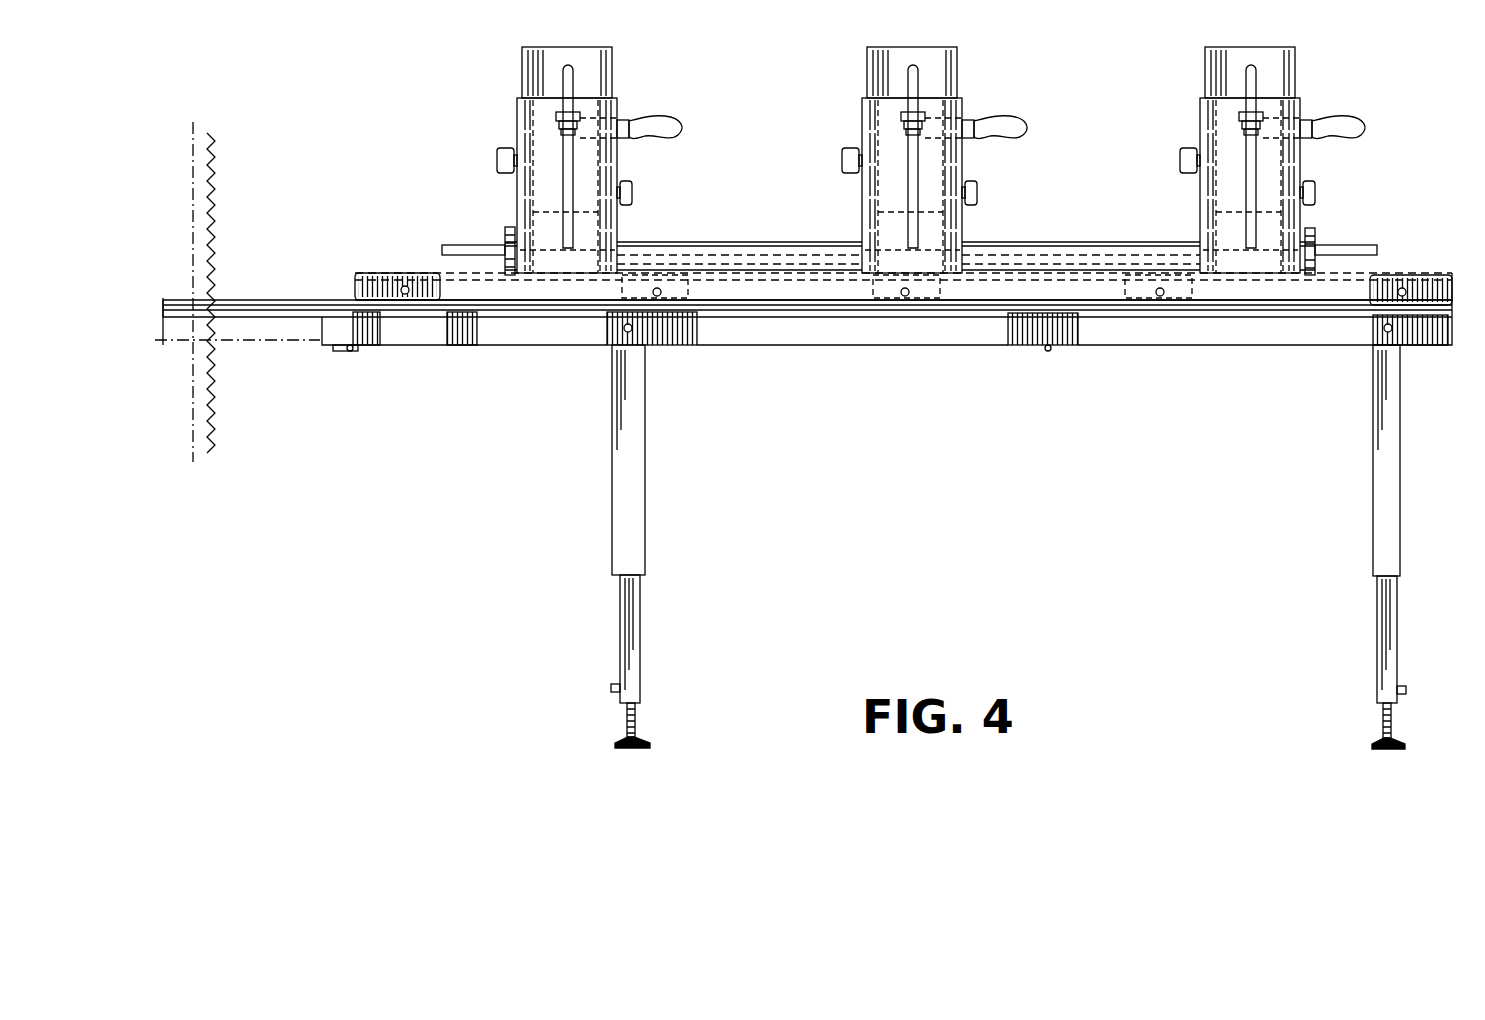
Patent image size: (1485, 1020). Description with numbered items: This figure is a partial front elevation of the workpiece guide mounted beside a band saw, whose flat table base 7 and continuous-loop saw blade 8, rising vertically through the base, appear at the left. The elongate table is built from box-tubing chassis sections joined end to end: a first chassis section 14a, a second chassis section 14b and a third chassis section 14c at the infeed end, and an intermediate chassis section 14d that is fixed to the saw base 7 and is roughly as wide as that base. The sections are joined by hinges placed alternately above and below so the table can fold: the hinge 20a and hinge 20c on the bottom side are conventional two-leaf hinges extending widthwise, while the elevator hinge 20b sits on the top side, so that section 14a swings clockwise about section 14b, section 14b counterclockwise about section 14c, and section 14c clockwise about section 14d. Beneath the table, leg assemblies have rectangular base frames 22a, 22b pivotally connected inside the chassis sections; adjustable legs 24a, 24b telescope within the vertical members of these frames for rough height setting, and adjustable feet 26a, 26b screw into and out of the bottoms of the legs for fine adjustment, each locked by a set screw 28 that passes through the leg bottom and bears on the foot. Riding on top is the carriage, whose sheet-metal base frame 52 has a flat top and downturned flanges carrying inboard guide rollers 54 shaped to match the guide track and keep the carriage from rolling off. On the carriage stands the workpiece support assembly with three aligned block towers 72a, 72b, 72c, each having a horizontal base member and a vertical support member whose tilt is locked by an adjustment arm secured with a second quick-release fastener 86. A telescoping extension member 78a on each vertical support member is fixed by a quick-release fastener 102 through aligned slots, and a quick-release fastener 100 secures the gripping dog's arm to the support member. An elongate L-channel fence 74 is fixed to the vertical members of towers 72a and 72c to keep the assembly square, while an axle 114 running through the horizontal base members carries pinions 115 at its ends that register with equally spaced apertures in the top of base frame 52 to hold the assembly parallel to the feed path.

The table base 7 is at (258, 330).
The saw blade 8 is at (207, 222).
The first chassis section 14a is at (1200, 330).
The second chassis section 14b is at (900, 322).
The third chassis section 14c is at (512, 322).
The intermediate chassis section 14d is at (336, 322).
The hinge 20a is at (1050, 348).
The elevator hinge 20b is at (695, 320).
The hinge 20c is at (352, 351).
The base frame 22a is at (1375, 515).
The base frame 22b is at (638, 478).
The adjustable leg 24a is at (1380, 652).
The adjustable leg 24b is at (636, 635).
The adjustable foot 26a is at (1380, 722).
The adjustable foot 26b is at (625, 722).
The set screw 28 is at (613, 686).
The base frame 52 is at (395, 272).
The inboard guide roller 54 is at (1425, 275).
The first block tower 72a is at (1217, 45).
The second block tower 72b is at (892, 43).
The third block tower 72c is at (548, 43).
The elongate fence 74 is at (700, 245).
The telescoping extension member 78a is at (535, 72).
The second quick-release fastener 86 is at (497, 158).
The quick-release fastener 100 is at (645, 121).
The quick-release fastener 102 is at (633, 191).
The axle 114 is at (1377, 250).
The pinion 115 is at (505, 232).